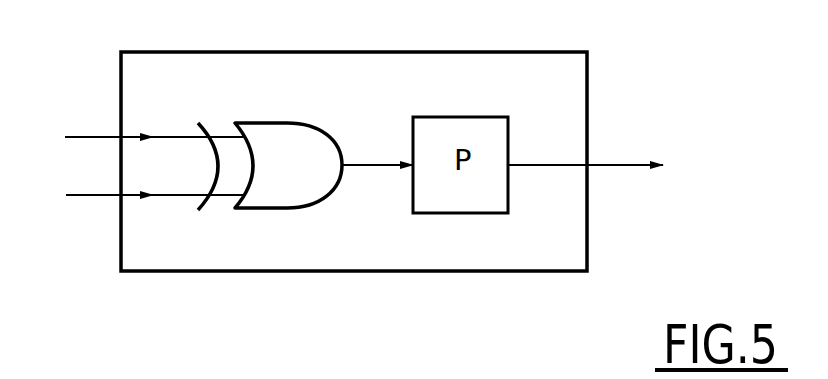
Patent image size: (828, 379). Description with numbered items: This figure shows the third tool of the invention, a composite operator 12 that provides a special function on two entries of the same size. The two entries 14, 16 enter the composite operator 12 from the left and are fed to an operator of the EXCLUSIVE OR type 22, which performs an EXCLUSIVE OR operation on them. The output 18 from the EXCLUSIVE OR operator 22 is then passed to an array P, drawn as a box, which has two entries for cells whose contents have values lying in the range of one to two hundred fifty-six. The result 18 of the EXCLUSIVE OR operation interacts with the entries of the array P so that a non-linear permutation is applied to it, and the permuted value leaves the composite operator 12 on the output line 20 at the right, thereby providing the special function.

The composite operator 12 is at (588, 81).
The first entry 14 is at (85, 137).
The second entry 16 is at (86, 195).
The result of EXCLUSIVE OR operation 18 is at (366, 163).
The output line 20 is at (627, 165).
The EXCLUSIVE OR operator 22 is at (285, 124).